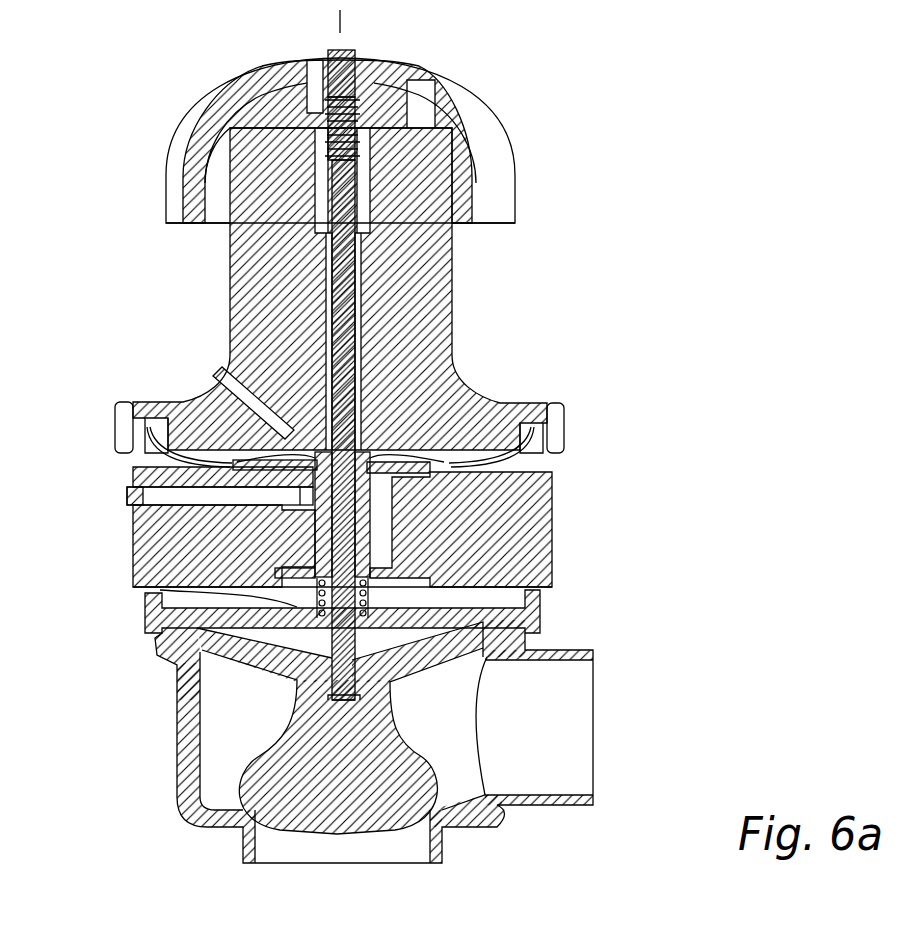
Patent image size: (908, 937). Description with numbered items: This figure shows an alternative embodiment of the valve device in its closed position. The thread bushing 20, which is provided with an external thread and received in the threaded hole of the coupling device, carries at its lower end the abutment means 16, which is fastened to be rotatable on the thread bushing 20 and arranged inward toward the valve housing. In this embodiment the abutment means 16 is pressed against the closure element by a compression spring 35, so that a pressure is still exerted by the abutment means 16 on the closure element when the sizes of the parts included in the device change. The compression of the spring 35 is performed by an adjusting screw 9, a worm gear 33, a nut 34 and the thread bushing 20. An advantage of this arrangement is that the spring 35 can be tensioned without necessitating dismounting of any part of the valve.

The adjusting screw 9 is at (180, 498).
The abutment means 16 is at (463, 608).
The thread bushing 20 is at (318, 548).
The worm gear 33 is at (215, 378).
The nut 34 is at (410, 523).
The compression spring 35 is at (318, 593).